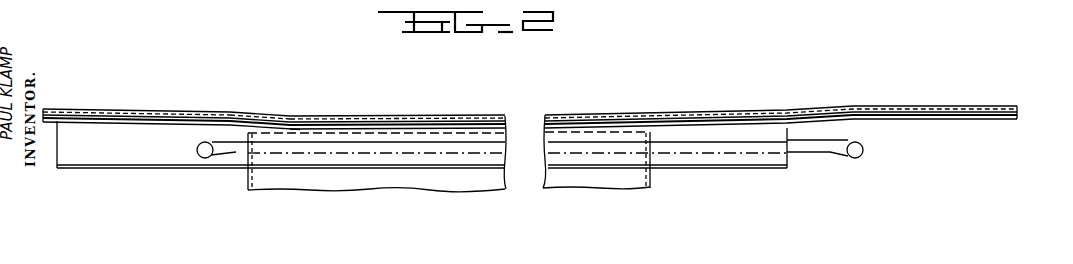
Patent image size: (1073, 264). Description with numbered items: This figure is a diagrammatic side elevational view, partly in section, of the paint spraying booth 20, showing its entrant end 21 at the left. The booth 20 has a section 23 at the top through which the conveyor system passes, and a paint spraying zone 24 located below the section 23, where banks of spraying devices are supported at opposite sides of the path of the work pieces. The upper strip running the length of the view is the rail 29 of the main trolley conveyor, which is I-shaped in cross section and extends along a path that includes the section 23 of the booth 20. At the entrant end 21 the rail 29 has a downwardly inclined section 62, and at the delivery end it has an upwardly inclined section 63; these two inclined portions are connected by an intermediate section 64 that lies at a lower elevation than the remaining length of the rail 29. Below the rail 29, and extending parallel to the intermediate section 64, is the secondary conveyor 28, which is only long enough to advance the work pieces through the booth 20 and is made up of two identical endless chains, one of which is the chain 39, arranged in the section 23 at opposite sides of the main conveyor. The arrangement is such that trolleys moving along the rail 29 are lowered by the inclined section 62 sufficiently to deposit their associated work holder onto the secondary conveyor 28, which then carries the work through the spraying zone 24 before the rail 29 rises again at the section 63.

The paint spraying booth 20 is at (240, 184).
The entrant end 21 is at (170, 150).
The section 23 is at (224, 110).
The paint spraying zone 24 is at (633, 177).
The secondary conveyor 28 is at (702, 140).
The rail 29 is at (165, 101).
The chain 39 is at (863, 149).
The downwardly inclined section 62 is at (256, 124).
The upwardly inclined section 63 is at (802, 112).
The intermediate section 64 is at (458, 114).